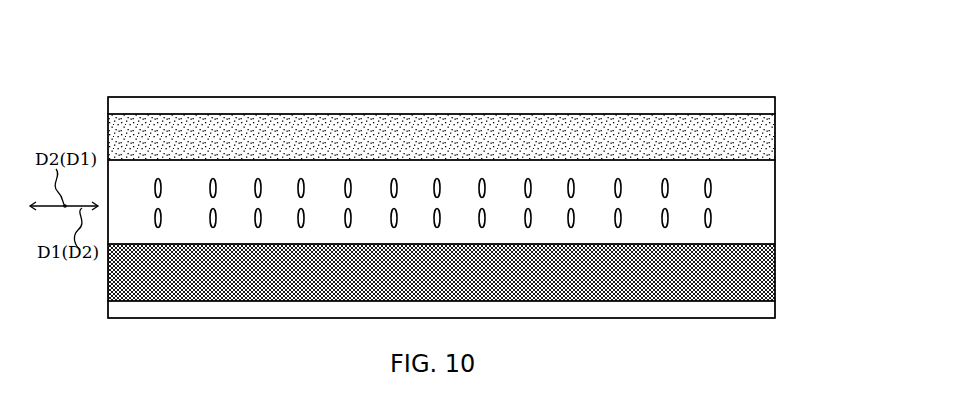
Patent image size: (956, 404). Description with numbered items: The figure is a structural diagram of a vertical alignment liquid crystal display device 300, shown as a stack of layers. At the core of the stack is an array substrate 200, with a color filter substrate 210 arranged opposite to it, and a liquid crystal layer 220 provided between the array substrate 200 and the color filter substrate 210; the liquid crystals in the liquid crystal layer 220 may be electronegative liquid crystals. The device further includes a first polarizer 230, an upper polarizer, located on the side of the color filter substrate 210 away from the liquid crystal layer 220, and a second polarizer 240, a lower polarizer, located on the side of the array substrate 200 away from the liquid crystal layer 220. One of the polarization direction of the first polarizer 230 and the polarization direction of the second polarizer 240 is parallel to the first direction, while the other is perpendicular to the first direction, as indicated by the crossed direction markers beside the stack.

The vertical alignment liquid crystal display device 300 is at (107, 48).
The first polarizer 230 is at (752, 104).
The color filter substrate 210 is at (755, 137).
The liquid crystal layer 220 is at (757, 213).
The array substrate 200 is at (760, 271).
The second polarizer 240 is at (755, 308).